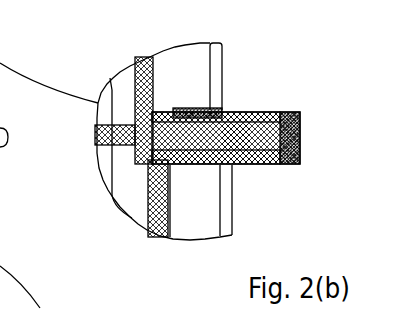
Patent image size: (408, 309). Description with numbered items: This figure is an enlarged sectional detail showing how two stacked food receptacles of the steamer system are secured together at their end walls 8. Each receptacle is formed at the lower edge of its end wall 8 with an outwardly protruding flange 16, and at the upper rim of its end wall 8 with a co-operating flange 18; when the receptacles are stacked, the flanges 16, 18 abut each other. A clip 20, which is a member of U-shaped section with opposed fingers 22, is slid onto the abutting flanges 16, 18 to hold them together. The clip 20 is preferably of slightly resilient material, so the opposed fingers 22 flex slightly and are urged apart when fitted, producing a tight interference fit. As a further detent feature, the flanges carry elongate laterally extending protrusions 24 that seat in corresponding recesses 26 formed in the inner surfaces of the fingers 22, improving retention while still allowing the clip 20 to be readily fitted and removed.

The end wall 8 is at (168, 233).
The outwardly protruding flange 16 is at (226, 122).
The co-operating flange 18 is at (232, 140).
The clip 20 is at (296, 112).
The opposed finger 22 is at (191, 113).
The elongate laterally extending protrusion 24 is at (265, 110).
The recess 26 is at (298, 149).